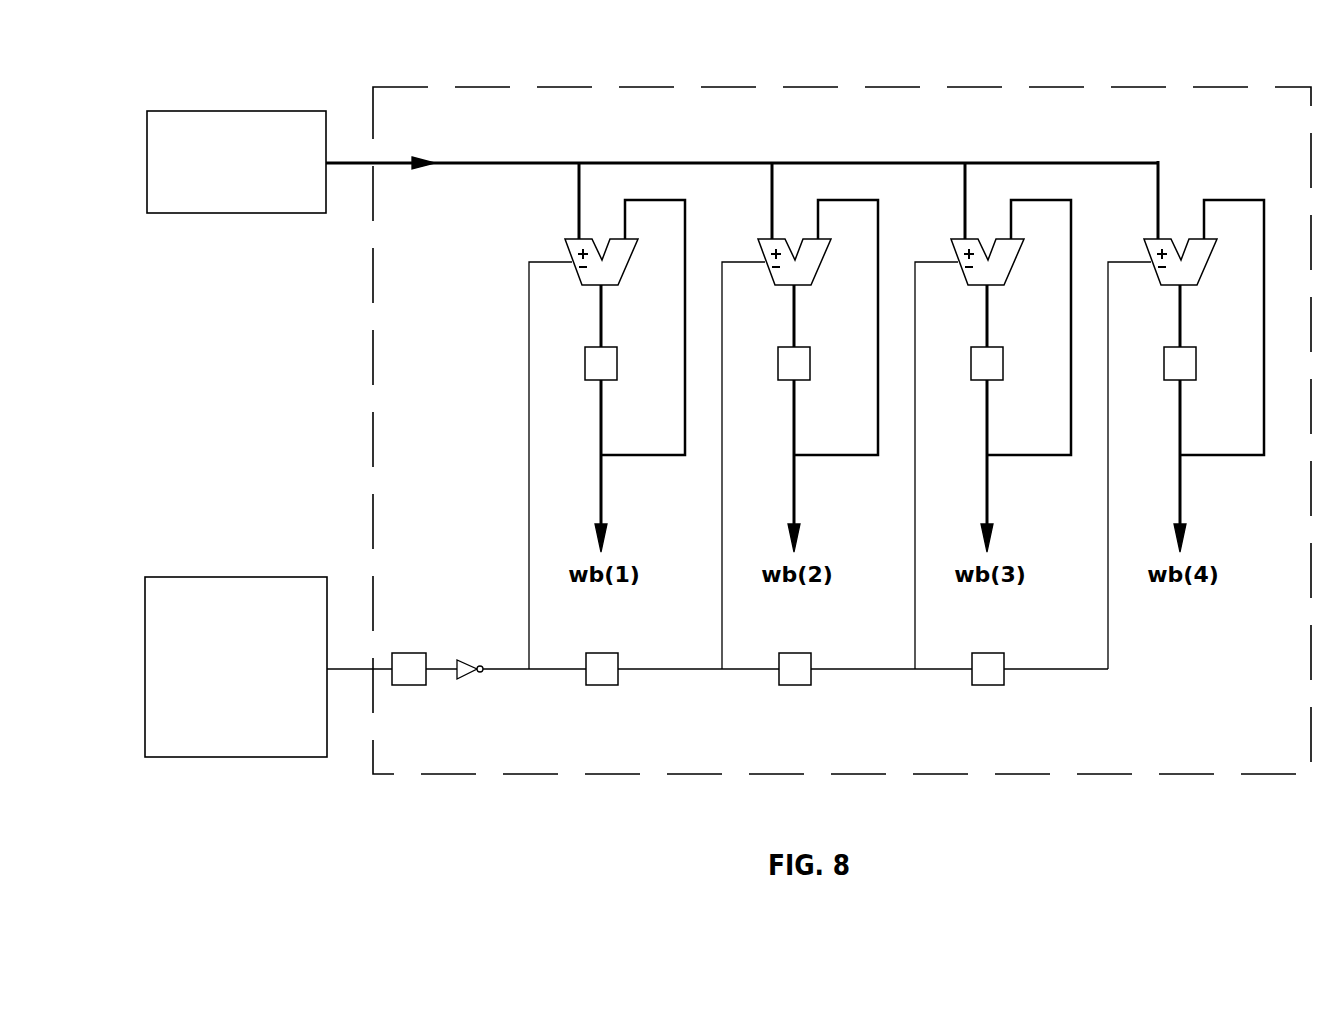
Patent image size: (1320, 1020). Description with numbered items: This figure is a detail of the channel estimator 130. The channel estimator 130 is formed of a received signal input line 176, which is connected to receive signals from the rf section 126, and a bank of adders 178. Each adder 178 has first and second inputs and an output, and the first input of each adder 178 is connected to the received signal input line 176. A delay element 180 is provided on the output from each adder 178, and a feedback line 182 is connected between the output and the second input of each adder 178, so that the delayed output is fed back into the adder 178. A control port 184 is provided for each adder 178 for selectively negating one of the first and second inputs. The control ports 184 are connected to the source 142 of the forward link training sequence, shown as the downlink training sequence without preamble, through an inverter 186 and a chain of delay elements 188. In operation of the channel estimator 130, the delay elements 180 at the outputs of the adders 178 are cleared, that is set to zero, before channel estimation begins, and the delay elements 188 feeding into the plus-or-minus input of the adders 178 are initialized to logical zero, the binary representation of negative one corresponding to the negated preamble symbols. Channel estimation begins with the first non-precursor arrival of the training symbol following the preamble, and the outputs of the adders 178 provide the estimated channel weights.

The rf section 126 is at (257, 110).
The source of the forward link training sequence 142 is at (242, 577).
The channel estimator 130 is at (1062, 774).
The received signal input line 176 is at (667, 162).
The adder 178 is at (567, 242).
The delay element 180 is at (585, 380).
The feedback line 182 is at (633, 457).
The control port 184 is at (573, 268).
The inverter 186 is at (463, 660).
The delay element 188 is at (426, 686).